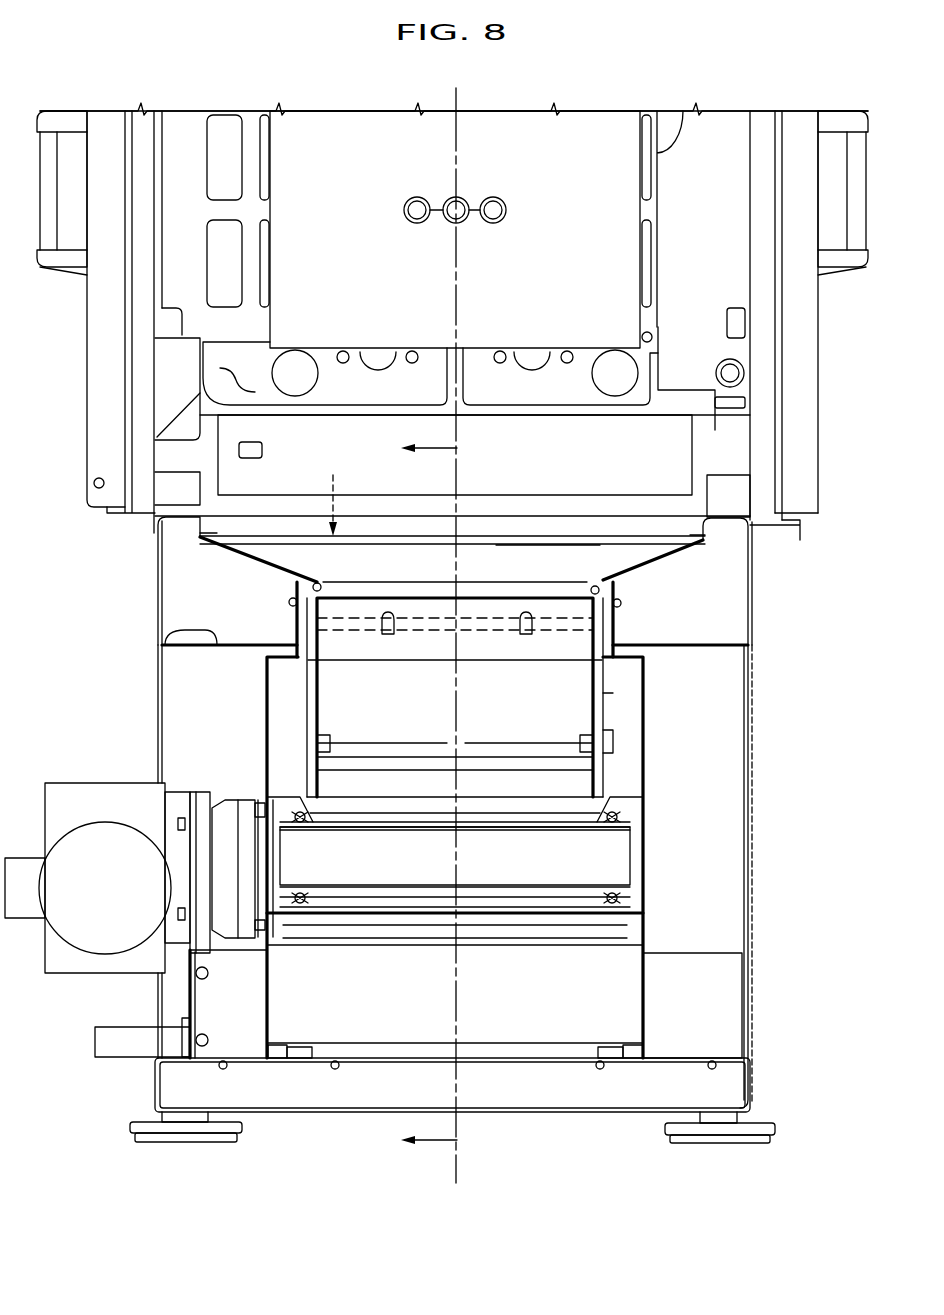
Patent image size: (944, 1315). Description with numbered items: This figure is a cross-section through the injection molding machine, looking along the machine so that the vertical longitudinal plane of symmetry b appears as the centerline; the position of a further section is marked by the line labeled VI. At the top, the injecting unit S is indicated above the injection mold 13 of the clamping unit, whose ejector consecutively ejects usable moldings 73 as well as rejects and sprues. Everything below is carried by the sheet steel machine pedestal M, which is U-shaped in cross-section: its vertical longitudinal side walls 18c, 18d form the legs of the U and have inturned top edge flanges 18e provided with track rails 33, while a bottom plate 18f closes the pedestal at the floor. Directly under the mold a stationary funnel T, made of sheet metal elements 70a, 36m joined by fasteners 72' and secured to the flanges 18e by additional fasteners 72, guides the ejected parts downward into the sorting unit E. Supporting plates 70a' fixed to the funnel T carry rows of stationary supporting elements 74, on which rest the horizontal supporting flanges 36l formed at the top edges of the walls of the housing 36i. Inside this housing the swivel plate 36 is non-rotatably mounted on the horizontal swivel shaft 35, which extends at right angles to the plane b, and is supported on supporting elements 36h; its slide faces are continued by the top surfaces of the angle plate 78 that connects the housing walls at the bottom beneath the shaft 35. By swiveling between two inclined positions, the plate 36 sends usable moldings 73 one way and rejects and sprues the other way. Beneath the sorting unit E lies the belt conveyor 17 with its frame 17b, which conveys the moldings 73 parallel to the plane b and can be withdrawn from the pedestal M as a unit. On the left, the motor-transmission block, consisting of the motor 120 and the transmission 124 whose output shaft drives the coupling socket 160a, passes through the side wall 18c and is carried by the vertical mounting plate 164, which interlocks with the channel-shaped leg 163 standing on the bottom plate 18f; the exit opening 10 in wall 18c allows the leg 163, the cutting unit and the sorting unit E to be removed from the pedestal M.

The exit opening 10 is at (753, 798).
The injection mold 13 is at (538, 303).
The belt conveyor 17 is at (625, 799).
The frame 17b is at (645, 853).
The longitudinal side wall 18c is at (160, 1001).
The longitudinal side wall 18d is at (752, 887).
The top edge flange 18e is at (185, 522).
The bottom plate 18f is at (545, 1068).
The track rail 33 is at (730, 492).
The swivel shaft 35 is at (415, 740).
The swivel plate 36 is at (607, 682).
The supporting element 36h is at (520, 627).
The housing 36i is at (617, 630).
The supporting flange 36l is at (297, 588).
The sheet metal element 36m is at (492, 555).
The sheet metal element 70a is at (452, 578).
The supporting plate 70a' is at (178, 641).
The fastener 72 is at (452, 495).
The fastener 72' is at (572, 576).
The usable molding 73 is at (481, 222).
The supporting element 74 is at (293, 602).
The angle plate 78 is at (488, 786).
The motor 120 is at (83, 840).
The transmission 124 is at (52, 807).
The coupling socket 160a is at (237, 812).
The leg 163 is at (720, 1003).
The mounting plate 164 is at (203, 798).
The sorting unit E is at (607, 663).
The machine pedestal M is at (752, 932).
The injecting unit S is at (205, 103).
The funnel T is at (333, 493).
The section line VI is at (414, 796).
The plane of symmetry b is at (454, 641).